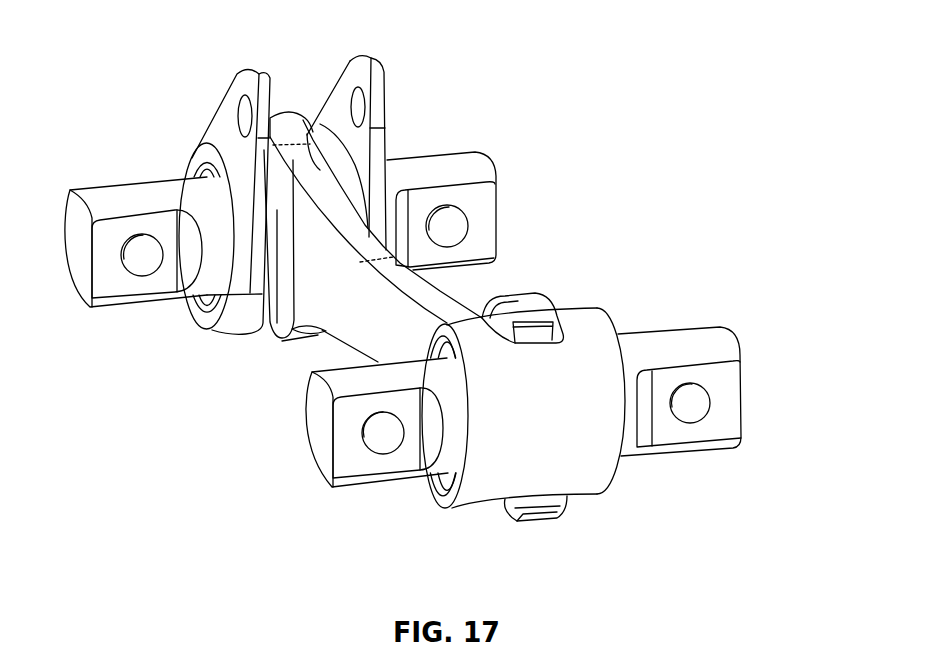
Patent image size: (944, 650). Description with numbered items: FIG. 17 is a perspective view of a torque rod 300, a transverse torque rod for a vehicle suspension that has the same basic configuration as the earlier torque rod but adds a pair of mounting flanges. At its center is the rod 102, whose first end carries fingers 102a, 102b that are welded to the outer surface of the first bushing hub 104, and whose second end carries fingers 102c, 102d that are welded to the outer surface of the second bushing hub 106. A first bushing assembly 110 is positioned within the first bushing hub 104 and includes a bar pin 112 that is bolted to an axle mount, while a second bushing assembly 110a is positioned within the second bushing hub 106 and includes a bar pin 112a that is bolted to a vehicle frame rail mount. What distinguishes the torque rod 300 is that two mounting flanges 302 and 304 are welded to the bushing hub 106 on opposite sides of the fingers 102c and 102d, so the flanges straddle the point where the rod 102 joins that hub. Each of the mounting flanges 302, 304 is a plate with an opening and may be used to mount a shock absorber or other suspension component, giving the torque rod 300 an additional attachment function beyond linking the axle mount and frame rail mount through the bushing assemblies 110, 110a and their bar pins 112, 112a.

The torque rod 300 is at (596, 174).
The mounting flange 302 is at (223, 113).
The mounting flange 304 is at (366, 60).
The rod 102 is at (450, 300).
The finger 102a is at (543, 300).
The finger 102b is at (563, 521).
The finger 102c is at (282, 125).
The finger 102d is at (268, 342).
The first bushing hub 104 is at (480, 493).
The second bushing hub 106 is at (207, 318).
The first bushing assembly 110 is at (748, 300).
The second bushing assembly 110a is at (417, 141).
The bar pin 112 is at (733, 397).
The bar pin 112a is at (453, 163).